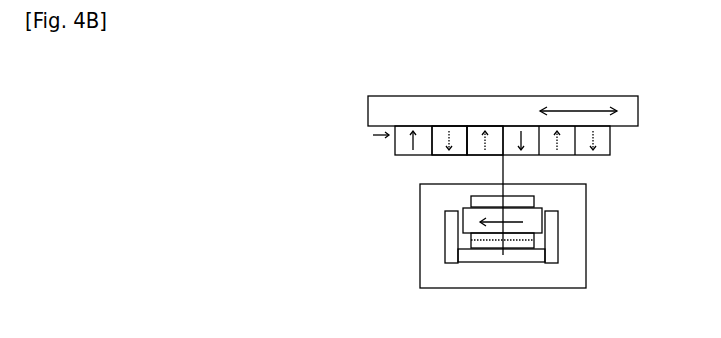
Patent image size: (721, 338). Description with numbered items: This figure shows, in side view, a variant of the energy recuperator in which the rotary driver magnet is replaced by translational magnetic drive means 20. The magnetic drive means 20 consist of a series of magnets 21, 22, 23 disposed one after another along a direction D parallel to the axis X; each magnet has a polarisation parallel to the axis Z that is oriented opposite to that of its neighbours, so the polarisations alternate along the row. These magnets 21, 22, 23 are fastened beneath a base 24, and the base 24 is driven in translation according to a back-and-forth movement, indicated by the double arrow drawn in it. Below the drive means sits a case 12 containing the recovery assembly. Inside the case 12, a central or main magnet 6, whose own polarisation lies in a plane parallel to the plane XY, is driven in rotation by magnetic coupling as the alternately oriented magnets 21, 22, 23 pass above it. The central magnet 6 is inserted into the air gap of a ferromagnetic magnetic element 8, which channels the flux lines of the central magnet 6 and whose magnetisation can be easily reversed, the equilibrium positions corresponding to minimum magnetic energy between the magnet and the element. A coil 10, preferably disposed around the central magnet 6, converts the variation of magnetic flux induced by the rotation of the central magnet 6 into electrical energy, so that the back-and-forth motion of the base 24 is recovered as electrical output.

The base 24 is at (487, 122).
The magnet 21 is at (400, 153).
The magnet 22 is at (432, 156).
The magnet 23 is at (495, 155).
The coil 10 is at (535, 198).
The magnetic drive means 20 is at (502, 220).
The central magnet 6 is at (482, 233).
The magnetic element 8 is at (555, 252).
The case 12 is at (462, 268).